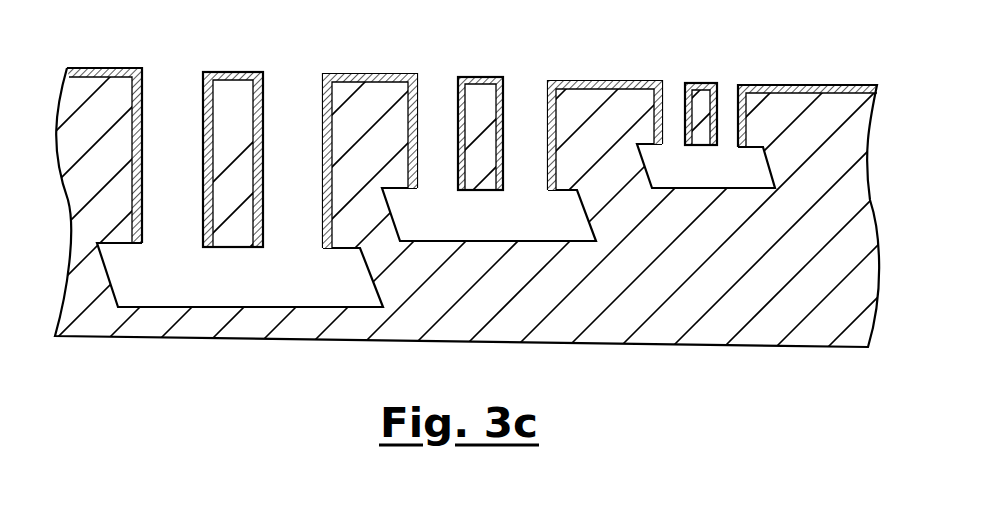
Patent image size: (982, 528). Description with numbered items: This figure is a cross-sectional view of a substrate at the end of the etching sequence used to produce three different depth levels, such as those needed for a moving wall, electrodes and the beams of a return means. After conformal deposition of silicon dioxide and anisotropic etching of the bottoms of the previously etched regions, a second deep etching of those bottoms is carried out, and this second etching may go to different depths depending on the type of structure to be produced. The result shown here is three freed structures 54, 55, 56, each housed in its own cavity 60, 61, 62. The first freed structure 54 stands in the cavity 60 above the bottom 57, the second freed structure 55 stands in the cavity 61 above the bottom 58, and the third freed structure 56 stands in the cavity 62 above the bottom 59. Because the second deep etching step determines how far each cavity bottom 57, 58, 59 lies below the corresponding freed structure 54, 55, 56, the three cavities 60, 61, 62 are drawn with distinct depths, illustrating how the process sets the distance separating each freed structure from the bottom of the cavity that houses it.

The freed structure 54 is at (229, 92).
The freed structure 55 is at (483, 97).
The freed structure 56 is at (698, 93).
The bottom of the cavity 57 is at (243, 308).
The bottom of the cavity 58 is at (490, 245).
The bottom of the cavity 59 is at (705, 190).
The cavity 60 is at (212, 275).
The cavity 61 is at (455, 210).
The cavity 62 is at (683, 155).